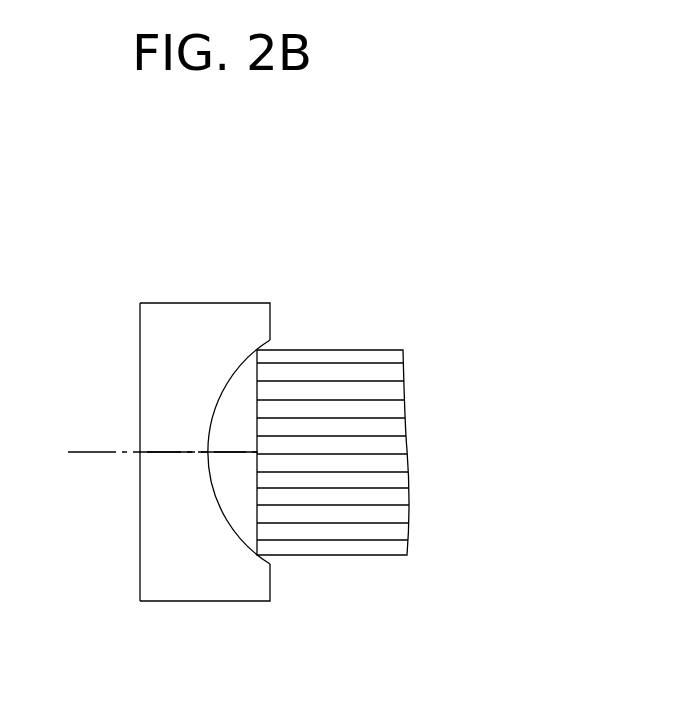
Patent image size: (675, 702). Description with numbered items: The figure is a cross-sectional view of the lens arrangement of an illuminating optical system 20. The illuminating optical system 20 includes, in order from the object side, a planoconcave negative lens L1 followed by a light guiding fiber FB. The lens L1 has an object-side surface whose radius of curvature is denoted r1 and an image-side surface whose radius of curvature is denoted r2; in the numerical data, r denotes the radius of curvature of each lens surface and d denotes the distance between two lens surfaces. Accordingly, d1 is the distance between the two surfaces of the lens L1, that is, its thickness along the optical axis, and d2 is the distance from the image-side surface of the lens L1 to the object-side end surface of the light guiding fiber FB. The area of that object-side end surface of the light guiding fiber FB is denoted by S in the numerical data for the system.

The illuminating optical system 20 is at (308, 200).
The planoconcave negative lens L1 is at (242, 303).
The radius of curvature of lens surface r1 is at (140, 345).
The radius of curvature of lens surface r2 is at (234, 368).
The distance between lens surfaces d1 is at (171, 452).
The distance between lens surfaces d2 is at (228, 452).
The light guiding fiber FB is at (324, 348).